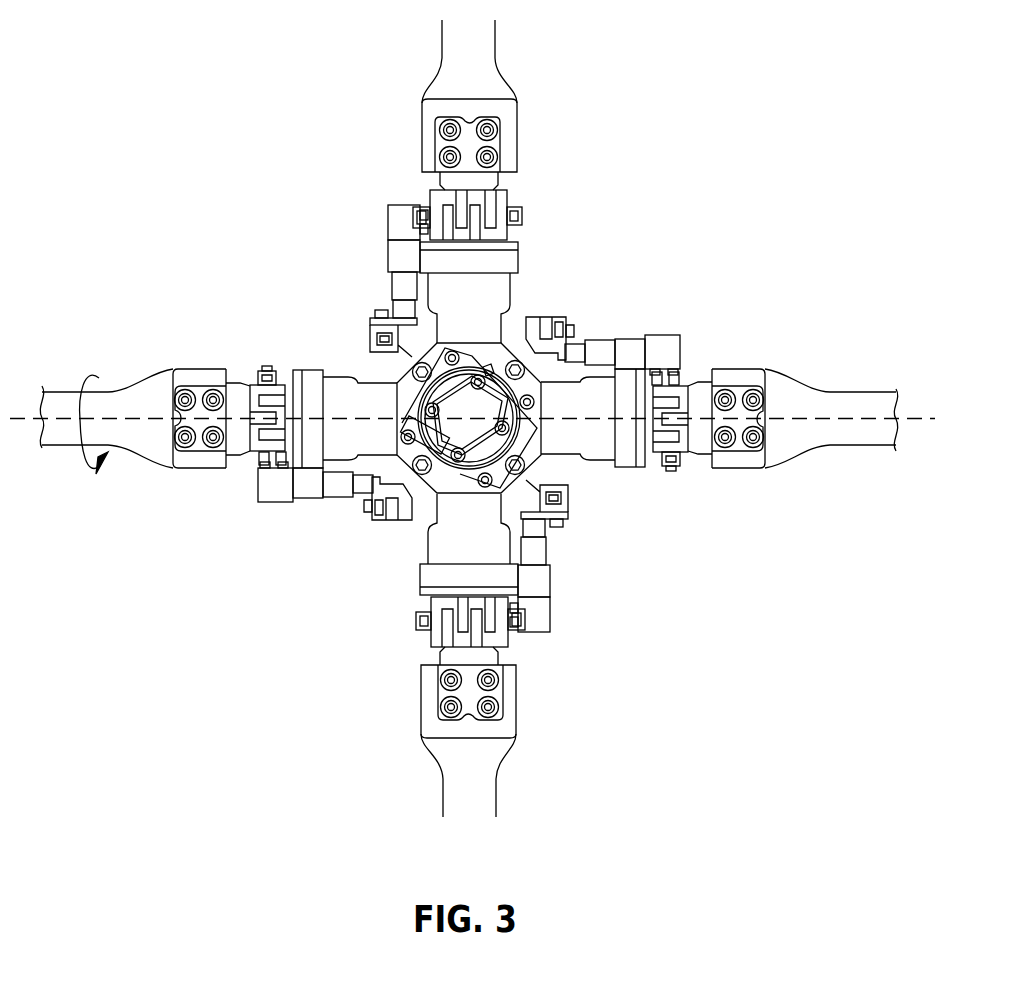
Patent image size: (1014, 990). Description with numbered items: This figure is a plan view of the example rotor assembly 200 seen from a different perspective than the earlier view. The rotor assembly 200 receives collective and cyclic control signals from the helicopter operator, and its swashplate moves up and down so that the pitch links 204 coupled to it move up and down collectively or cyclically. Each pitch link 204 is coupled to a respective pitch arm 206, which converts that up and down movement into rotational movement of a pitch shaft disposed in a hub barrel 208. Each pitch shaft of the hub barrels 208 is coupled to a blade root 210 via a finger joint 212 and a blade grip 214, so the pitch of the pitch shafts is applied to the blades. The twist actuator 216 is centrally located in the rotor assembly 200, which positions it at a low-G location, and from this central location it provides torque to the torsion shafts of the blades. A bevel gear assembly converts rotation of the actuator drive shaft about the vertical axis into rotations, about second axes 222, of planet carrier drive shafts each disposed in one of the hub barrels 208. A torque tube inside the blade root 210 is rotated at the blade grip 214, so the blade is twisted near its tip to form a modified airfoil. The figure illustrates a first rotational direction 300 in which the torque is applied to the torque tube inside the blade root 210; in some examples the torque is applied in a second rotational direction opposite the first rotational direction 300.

The rotor assembly 200 is at (472, 418).
The pitch link 204 is at (385, 520).
The pitch arm 206 is at (280, 502).
The hub barrel 208 is at (348, 378).
The blade root 210 is at (173, 368).
The finger joint 212 is at (256, 378).
The blade grip 214 is at (193, 453).
The twist actuator 216 is at (488, 375).
The second axis 222 is at (850, 419).
The first rotational direction 300 is at (92, 368).